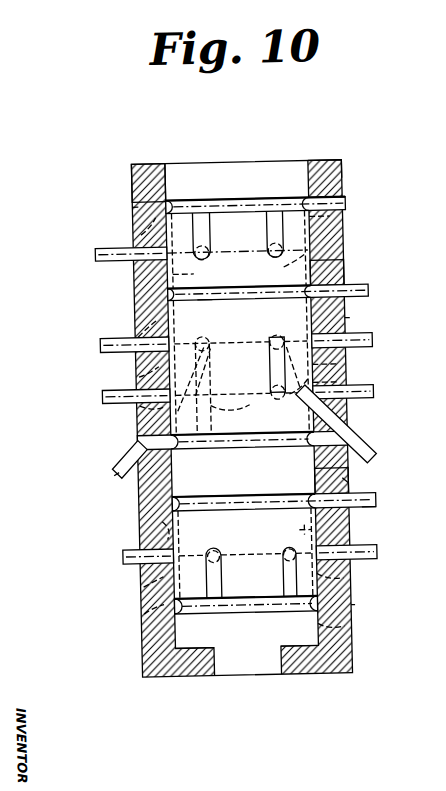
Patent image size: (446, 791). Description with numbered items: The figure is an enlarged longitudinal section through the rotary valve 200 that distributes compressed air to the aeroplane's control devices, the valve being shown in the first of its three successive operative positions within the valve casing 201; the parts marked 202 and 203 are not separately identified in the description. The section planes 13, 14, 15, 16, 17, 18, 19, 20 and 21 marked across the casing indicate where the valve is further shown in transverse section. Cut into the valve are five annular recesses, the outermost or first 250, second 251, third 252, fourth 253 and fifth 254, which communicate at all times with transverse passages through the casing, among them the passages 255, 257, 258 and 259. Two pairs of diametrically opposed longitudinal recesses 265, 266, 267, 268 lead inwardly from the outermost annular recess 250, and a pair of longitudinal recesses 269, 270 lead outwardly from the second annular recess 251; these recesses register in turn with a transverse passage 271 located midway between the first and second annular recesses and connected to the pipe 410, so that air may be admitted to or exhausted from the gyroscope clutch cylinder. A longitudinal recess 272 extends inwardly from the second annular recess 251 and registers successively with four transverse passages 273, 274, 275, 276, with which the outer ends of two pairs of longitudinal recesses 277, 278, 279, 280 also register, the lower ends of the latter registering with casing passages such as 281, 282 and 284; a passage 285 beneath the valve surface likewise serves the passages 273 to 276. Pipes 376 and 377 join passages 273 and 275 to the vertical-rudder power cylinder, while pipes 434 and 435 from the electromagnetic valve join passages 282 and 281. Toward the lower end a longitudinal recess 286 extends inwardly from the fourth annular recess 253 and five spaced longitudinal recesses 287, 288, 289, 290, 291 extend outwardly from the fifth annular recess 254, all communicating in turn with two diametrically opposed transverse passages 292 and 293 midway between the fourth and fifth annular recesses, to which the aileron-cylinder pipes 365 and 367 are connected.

The transverse rod 13 is at (355, 207).
The transverse rod 14 is at (54, 248).
The transverse rod 15 is at (136, 293).
The transverse rod 16 is at (239, 344).
The transverse rod 17 is at (419, 394).
The transverse rod 18 is at (136, 438).
The transverse rod 19 is at (138, 503).
The transverse rod 20 is at (243, 552).
The transverse rod 21 is at (131, 603).
The rotary valve 200 is at (251, 163).
The valve casing 201 is at (151, 163).
The middle housing section 202 is at (348, 292).
The lower housing section 203 is at (370, 503).
The first annular recess 250 is at (345, 177).
The second annular recess 251 is at (210, 299).
The third annular recess 252 is at (354, 444).
The fourth annular recess 253 is at (378, 508).
The fifth annular recess 254 is at (348, 630).
The transverse passage 255 is at (350, 207).
The transverse passage 257 is at (127, 470).
The transverse passage 258 is at (342, 482).
The transverse passage 259 is at (141, 608).
The longitudinal recess 265 is at (138, 206).
The longitudinal recess 266 is at (202, 224).
The longitudinal recess 267 is at (334, 218).
The longitudinal recess 268 is at (286, 226).
The longitudinal recess 269 is at (339, 243).
The longitudinal recess 270 is at (196, 271).
The transverse passage 271 is at (154, 212).
The longitudinal recess 272 is at (347, 325).
The transverse passage 273 is at (356, 368).
The transverse passage 274 is at (279, 341).
The transverse passage 275 is at (139, 320).
The transverse passage 276 is at (205, 342).
The longitudinal recess 277 is at (356, 386).
The longitudinal recess 278 is at (270, 396).
The longitudinal recess 279 is at (141, 370).
The longitudinal recess 280 is at (216, 348).
The casing passage 281 is at (140, 404).
The casing passage 282 is at (350, 417).
The casing passage 284 is at (215, 420).
The passage 285 is at (216, 384).
The longitudinal recess 286 is at (343, 530).
The longitudinal recess 287 is at (381, 604).
The longitudinal recess 288 is at (280, 629).
The longitudinal recess 289 is at (206, 627).
The longitudinal recess 290 is at (163, 526).
The longitudinal recess 291 is at (215, 578).
The transverse passage 292 is at (345, 580).
The transverse passage 293 is at (141, 581).
The pipe 365 is at (377, 556).
The pipe 367 is at (115, 547).
The pipe 376 is at (376, 348).
The pipe 377 is at (102, 342).
The pipe 410 is at (97, 249).
The pipe 434 is at (376, 400).
The pipe 435 is at (100, 392).